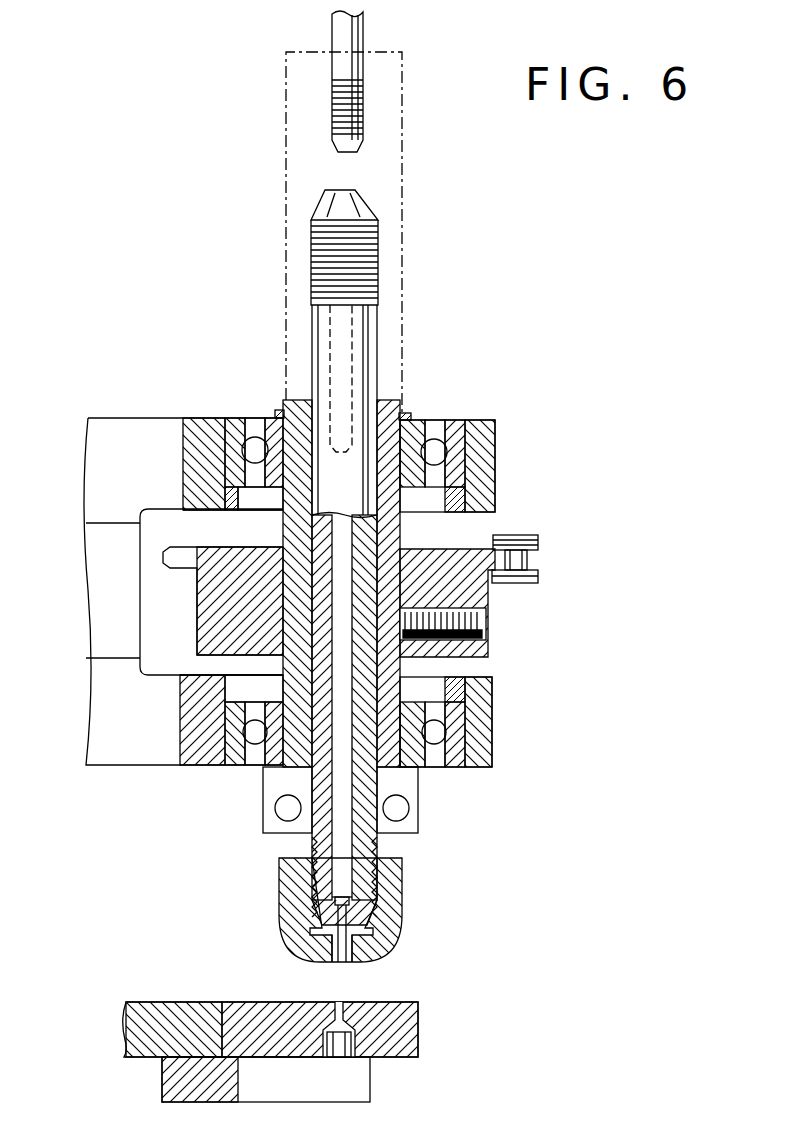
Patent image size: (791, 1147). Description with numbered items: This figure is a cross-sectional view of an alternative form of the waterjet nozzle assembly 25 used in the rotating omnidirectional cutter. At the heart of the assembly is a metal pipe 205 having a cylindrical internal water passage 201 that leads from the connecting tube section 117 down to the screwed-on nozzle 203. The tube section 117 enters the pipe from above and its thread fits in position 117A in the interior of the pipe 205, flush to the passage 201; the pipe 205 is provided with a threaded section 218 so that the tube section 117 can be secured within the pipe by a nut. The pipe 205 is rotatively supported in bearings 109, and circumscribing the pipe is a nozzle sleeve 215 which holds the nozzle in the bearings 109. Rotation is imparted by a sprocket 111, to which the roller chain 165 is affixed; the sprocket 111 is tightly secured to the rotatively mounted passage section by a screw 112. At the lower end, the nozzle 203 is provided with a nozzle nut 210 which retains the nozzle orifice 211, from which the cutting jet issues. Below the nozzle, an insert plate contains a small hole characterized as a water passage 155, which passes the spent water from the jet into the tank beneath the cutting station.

The connecting tube section 117 is at (363, 36).
The threaded section 218 is at (378, 258).
The position in the interior of pipe 117A is at (350, 386).
The waterjet assembly 25 is at (254, 398).
The bearings 109 is at (465, 426).
The metal pipe 205 is at (372, 540).
The roller chain 165 is at (535, 537).
The sprocket 111 is at (484, 598).
The screw 112 is at (488, 626).
The cylindrical internal water passage 201 is at (348, 681).
The nozzle sleeve 215 is at (420, 815).
The nozzle 203 is at (402, 907).
The nozzle nut 210 is at (356, 942).
The nozzle orifice 211 is at (340, 940).
The water passage 155 is at (340, 1045).